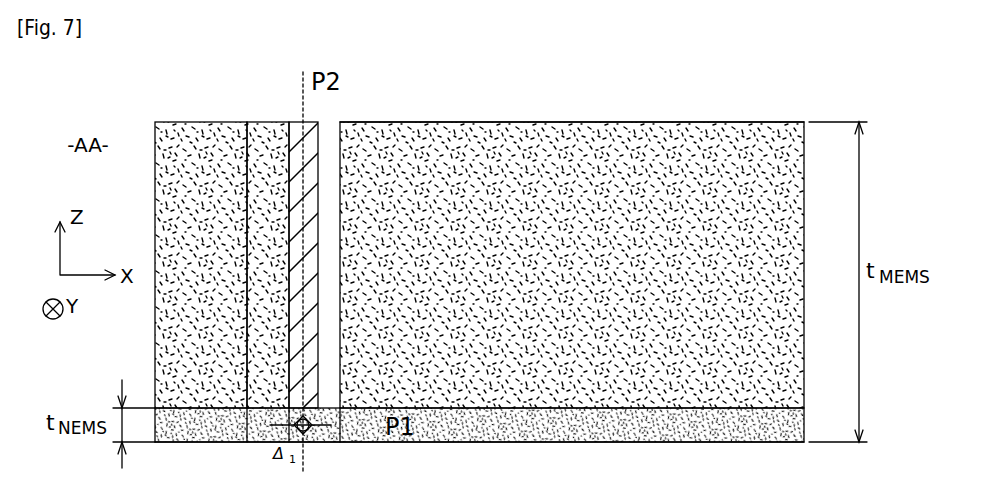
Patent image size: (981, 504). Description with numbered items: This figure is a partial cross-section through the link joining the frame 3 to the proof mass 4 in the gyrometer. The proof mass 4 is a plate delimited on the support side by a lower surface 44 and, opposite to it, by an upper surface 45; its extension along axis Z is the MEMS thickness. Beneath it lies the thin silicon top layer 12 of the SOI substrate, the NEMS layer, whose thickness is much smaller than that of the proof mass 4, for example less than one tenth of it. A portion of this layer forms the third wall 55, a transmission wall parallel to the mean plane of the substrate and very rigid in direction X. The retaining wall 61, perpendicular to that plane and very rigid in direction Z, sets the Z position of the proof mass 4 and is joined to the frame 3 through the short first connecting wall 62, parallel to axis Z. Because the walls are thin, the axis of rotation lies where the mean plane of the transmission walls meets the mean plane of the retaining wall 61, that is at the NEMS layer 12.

The frame 3 is at (201, 265).
The proof mass 4 is at (572, 265).
The thin silicon top layer 12 is at (810, 408).
The lower surface 44 is at (560, 442).
The upper surface 45 is at (625, 122).
The third wall 55 is at (318, 431).
The retaining wall 61 is at (312, 156).
The first connecting wall 62 is at (271, 141).